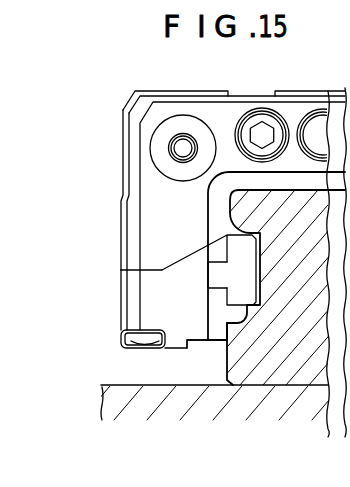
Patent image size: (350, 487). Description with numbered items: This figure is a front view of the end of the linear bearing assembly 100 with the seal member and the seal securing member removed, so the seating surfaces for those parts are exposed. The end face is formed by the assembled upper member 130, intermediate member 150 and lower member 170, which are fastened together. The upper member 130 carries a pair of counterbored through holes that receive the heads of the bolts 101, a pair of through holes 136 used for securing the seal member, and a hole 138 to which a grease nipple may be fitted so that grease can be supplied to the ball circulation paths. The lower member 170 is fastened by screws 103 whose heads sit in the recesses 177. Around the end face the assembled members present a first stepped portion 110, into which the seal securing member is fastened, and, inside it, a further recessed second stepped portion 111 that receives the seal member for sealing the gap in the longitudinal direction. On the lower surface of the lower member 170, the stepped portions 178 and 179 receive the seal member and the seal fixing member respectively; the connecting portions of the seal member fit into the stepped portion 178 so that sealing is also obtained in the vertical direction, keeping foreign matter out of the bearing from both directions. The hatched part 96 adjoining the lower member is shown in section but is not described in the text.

The door hinge assembly 100 is at (133, 89).
The first stepped portion 110 is at (162, 218).
The upper member 130 is at (122, 169).
The through holes 136 is at (181, 143).
The bolts 101 is at (255, 122).
The hole 138 is at (317, 134).
The spring plate 150 is at (121, 289).
The second stepped portion 111 is at (217, 302).
The lower member 170 is at (121, 326).
The screws 103 is at (130, 337).
The recesses 177 is at (162, 343).
The stepped portion 179 is at (193, 341).
The stepped portion 178 is at (222, 338).
The housing wall 96 is at (250, 372).